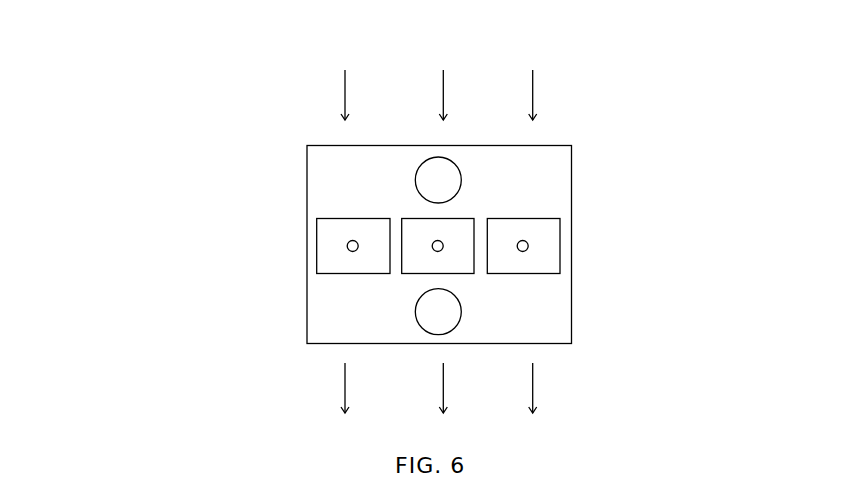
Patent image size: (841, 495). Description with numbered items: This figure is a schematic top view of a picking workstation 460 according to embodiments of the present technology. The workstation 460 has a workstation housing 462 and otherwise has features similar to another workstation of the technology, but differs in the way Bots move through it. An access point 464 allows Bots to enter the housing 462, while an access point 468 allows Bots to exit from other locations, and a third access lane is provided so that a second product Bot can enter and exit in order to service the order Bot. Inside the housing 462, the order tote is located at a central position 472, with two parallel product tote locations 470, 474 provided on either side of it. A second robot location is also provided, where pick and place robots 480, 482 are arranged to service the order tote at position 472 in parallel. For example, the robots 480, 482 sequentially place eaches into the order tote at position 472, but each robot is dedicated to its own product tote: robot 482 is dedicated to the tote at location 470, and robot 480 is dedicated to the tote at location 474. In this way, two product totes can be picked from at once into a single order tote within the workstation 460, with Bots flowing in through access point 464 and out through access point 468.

The picking workstation 460 is at (368, 246).
The workstation housing 462 is at (565, 197).
The access point 464 is at (556, 108).
The access point 468 is at (550, 394).
The product tote location 470 is at (306, 246).
The order tote position 472 is at (403, 272).
The product tote location 474 is at (558, 267).
The pick and place robot 480 is at (417, 174).
The pick and place robot 482 is at (460, 314).